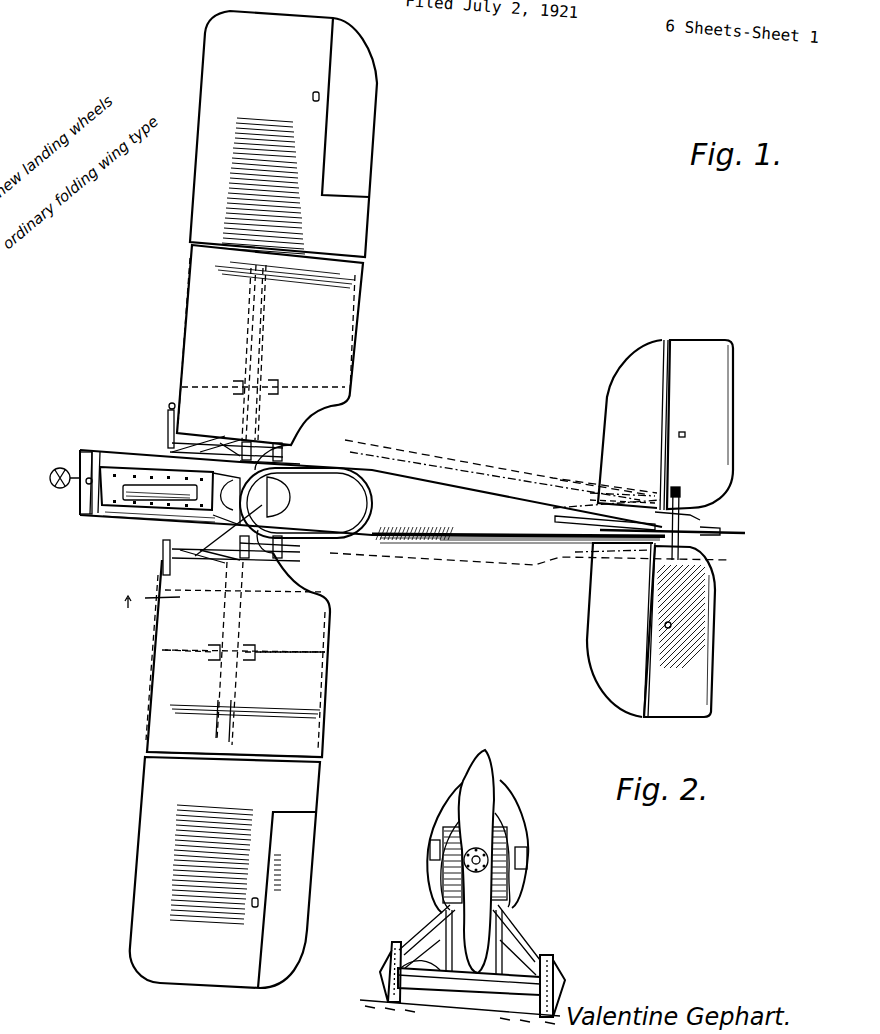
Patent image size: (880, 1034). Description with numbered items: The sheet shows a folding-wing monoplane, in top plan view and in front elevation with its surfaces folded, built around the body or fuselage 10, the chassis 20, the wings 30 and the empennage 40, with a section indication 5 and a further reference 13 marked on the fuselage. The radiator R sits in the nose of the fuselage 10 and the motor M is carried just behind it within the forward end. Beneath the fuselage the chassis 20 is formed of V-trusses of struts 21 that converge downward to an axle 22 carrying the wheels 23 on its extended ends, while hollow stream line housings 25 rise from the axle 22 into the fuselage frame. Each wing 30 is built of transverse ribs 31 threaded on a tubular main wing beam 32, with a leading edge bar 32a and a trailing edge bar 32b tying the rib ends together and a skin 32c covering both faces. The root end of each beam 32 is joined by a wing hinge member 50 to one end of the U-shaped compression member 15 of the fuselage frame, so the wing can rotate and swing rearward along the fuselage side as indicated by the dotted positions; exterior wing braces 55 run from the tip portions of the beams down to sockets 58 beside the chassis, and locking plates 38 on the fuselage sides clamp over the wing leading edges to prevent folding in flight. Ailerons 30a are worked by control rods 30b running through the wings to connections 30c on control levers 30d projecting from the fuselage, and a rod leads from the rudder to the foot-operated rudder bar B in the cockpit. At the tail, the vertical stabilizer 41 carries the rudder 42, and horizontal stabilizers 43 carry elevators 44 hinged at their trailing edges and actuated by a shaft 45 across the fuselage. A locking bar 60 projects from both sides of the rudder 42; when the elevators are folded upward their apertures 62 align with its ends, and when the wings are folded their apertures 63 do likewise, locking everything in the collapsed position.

In FIG. 1, the fuselage 10 is at (440, 482).
In FIG. 1, the keel / longitudinal member 13 is at (332, 510).
In FIG. 1, the compression member 15 is at (226, 492).
In FIG. 2, the chassis 20 is at (469, 986).
In FIG. 2, the struts 21 is at (530, 945).
In FIG. 2, the axle 22 is at (490, 985).
In FIG. 1, the wheels 23 is at (170, 418).
In FIG. 2, the wheels 23 is at (555, 960).
In FIG. 2, the stream line housings 25 is at (510, 930).
In FIG. 1, the wings 30 is at (392, 585).
In FIG. 2, the wings 30 is at (508, 810).
In FIG. 1, the ailerons 30a is at (308, 885).
In FIG. 1, the control wires or rods 30b is at (278, 557).
In FIG. 1, the connections 30c is at (285, 546).
In FIG. 1, the control levers 30d is at (306, 503).
In FIG. 1, the transverse ribs 31 is at (287, 664).
In FIG. 1, the main wing beam 32 is at (238, 645).
In FIG. 1, the leading edge bar 32a is at (162, 634).
In FIG. 1, the trailing edge bar 32b is at (328, 650).
In FIG. 1, the skin 32c is at (234, 768).
In FIG. 1, the locking plates 38 is at (163, 548).
In FIG. 1, the empennage 40 is at (735, 478).
In FIG. 1, the vertical fin or stabilizer 41 is at (568, 518).
In FIG. 1, the rudder 42 is at (725, 535).
In FIG. 1, the horizontal stabilizers 43 is at (598, 663).
In FIG. 1, the elevators 44 is at (700, 700).
In FIG. 1, the shaft 45 is at (672, 510).
In FIG. 1, the wing hinge members 50 is at (232, 548).
In FIG. 2, the wing hinge members 50 is at (527, 856).
In FIG. 2, the exterior wing braces 55 is at (512, 905).
In FIG. 2, the sockets 58 is at (396, 940).
In FIG. 1, the locking bar 60 is at (690, 516).
In FIG. 1, the aperture 62 is at (686, 432).
In FIG. 1, the aperture 63 is at (252, 905).
In FIG. 1, the seat / section line 5 is at (322, 613).
In FIG. 1, the propeller P is at (60, 490).
In FIG. 2, the propeller P is at (490, 770).
In FIG. 1, the motor M is at (115, 472).
In FIG. 1, the radiator R is at (88, 452).
In FIG. 1, the rudder bar B is at (218, 539).